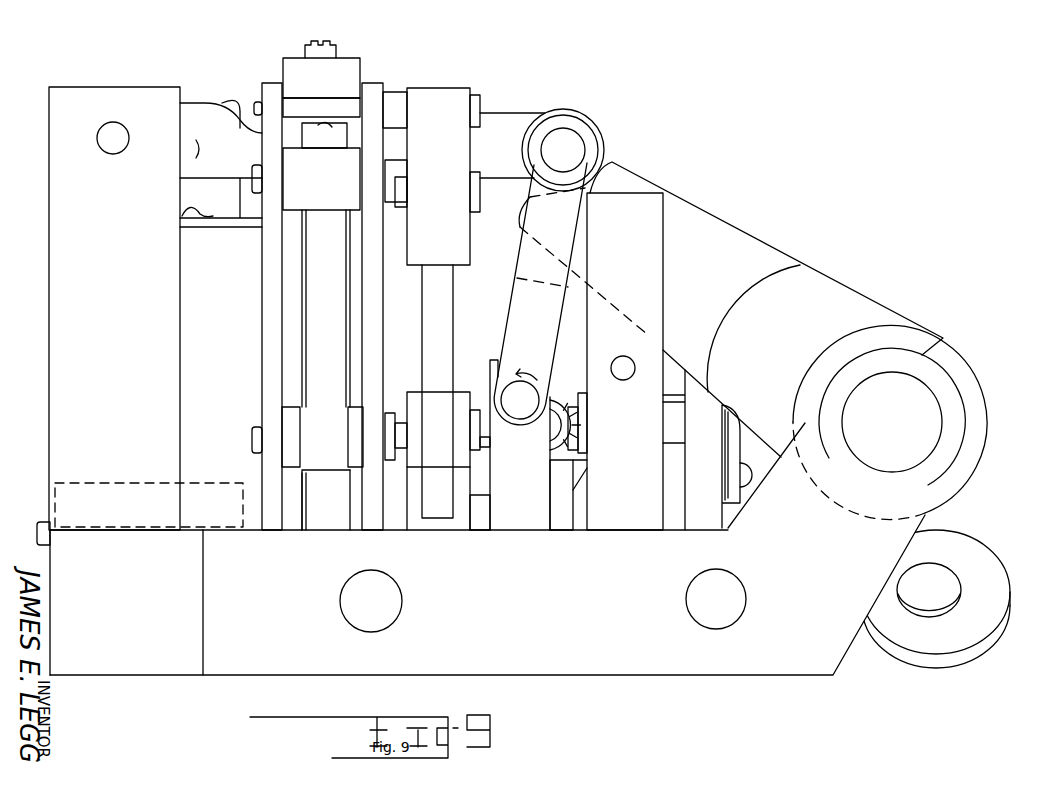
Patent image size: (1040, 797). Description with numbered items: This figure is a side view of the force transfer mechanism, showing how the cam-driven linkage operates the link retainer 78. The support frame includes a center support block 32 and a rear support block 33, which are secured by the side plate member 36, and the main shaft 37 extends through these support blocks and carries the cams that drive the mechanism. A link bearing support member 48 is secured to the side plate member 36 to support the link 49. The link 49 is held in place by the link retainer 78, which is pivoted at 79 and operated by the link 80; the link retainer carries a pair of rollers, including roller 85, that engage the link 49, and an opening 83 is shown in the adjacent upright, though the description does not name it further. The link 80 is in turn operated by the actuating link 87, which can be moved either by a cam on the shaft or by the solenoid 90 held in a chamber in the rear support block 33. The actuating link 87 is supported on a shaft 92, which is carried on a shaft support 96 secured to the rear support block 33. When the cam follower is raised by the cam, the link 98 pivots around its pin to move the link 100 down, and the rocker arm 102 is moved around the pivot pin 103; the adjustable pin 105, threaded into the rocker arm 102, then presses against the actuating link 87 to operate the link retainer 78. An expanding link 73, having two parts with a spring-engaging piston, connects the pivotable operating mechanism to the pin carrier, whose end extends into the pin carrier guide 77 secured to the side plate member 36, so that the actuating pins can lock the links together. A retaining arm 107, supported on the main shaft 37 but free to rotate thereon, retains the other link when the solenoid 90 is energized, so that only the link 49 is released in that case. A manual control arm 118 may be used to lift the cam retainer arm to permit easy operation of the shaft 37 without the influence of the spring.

The center support block 32 is at (512, 520).
The rear support block 33 is at (110, 665).
The side plate member 36 is at (562, 672).
The main shaft 37 is at (995, 556).
The link bearing support member 48 is at (990, 413).
The link 49 is at (826, 276).
The expanding link 73 is at (562, 398).
The pin carrier guide 77 is at (625, 518).
The link retainer 78 is at (513, 322).
The pivot 79 is at (520, 417).
The link 80 is at (502, 112).
The pin hole 83 is at (621, 380).
The roller 85 is at (595, 121).
The actuating link 87 is at (216, 130).
The solenoid 90 is at (224, 309).
The shaft 92 is at (108, 146).
The shaft support 96 is at (62, 277).
The link 98 is at (350, 420).
The link 100 is at (328, 465).
The rocker arm 102 is at (359, 82).
The pivot pin 103 is at (253, 174).
The adjustable pin 105 is at (340, 47).
The retaining arm 107 is at (707, 518).
The manual control arm 118 is at (455, 300).